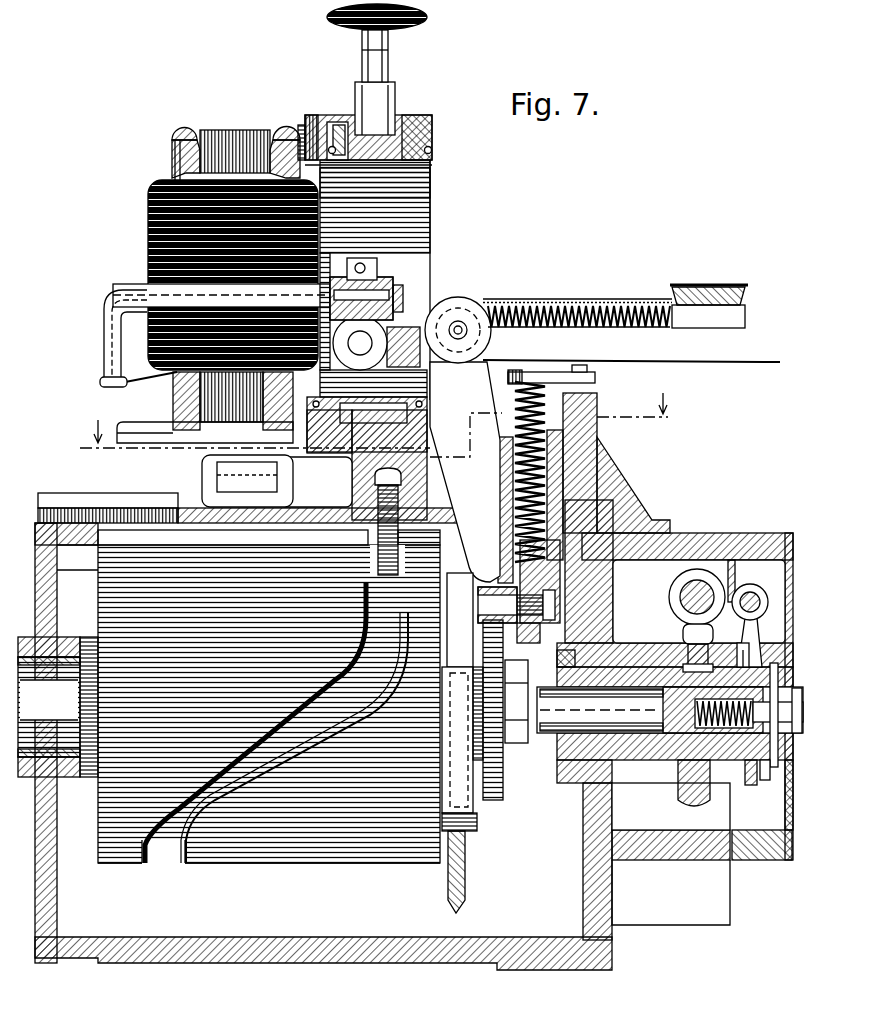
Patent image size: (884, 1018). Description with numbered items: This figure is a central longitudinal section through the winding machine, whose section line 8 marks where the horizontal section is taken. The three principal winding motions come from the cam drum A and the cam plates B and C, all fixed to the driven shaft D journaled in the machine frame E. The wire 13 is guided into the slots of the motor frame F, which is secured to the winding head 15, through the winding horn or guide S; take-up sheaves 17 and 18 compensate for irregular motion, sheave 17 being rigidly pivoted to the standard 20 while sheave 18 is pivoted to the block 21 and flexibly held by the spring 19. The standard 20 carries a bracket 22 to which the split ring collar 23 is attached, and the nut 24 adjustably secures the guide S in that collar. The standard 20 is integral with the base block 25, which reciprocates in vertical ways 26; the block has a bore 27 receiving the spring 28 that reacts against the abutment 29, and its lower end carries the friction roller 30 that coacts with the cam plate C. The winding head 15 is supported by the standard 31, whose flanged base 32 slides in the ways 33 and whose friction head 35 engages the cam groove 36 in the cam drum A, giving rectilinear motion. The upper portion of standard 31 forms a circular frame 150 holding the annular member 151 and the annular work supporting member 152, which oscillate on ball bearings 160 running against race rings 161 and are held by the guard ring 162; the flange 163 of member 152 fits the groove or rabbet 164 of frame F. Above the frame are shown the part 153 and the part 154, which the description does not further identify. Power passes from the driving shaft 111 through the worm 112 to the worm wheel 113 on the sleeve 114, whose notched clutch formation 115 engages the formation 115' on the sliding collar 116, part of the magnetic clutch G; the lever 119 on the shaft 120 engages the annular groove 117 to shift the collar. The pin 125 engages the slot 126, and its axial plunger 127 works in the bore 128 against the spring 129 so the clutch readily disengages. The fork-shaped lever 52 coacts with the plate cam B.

The knob 154 is at (389, 57).
The circular frame 150 is at (405, 113).
The stem cylinder 153 is at (367, 98).
The annular member 151 is at (415, 113).
The race rings 161 is at (337, 122).
The ball bearings 160 is at (315, 125).
The flange 163 is at (303, 133).
The groove or rabbet 164 is at (275, 130).
The guard ring 162 is at (434, 145).
The winding head 15 is at (433, 165).
The annular work supporting member 152 is at (422, 183).
The motor frame F is at (238, 130).
The winding horn or guide S is at (105, 332).
The wire 13 is at (618, 301).
The nut 24 is at (360, 262).
The split ring collar 23 is at (392, 280).
The bracket 22 is at (408, 328).
The take-up sheave 17 is at (462, 302).
The spring 19 is at (560, 308).
The take-up sheave 18 is at (708, 288).
The block 21 is at (708, 317).
The standard 20 is at (465, 472).
The abutment 29 is at (596, 380).
The spring 28 is at (518, 480).
The bore 27 is at (507, 500).
The vertical ways 26 is at (558, 434).
The base block 25 is at (567, 457).
The section line 8— 8 is at (373, 425).
The ways 33 is at (112, 505).
The flanged base 32 is at (190, 508).
The standard 31 is at (352, 476).
The friction head 35 is at (380, 543).
The cam groove 36 is at (163, 853).
The cam drum A is at (312, 865).
The cam plate B is at (477, 812).
The cam plate C is at (505, 795).
The driven shaft D is at (545, 752).
The machine frame E is at (612, 947).
The magnetic clutch G is at (702, 859).
The friction roller 30 is at (478, 628).
The fork-shaped lever 52 is at (465, 887).
The worm 112 is at (697, 570).
The driving shaft 111 is at (732, 587).
The shaft 120 is at (752, 585).
The lever 119 is at (775, 610).
The worm wheel 113 is at (682, 628).
The sleeve 114 is at (630, 655).
The notched clutch formation 115 is at (749, 645).
The clutch formation 115' is at (751, 655).
The slot 126 is at (780, 690).
The spring 129 is at (660, 703).
The pin 125 is at (799, 736).
The axial plunger 127 is at (799, 762).
The bore 128 is at (712, 805).
The sliding collar 116 is at (758, 760).
The annular groove 117 is at (746, 770).